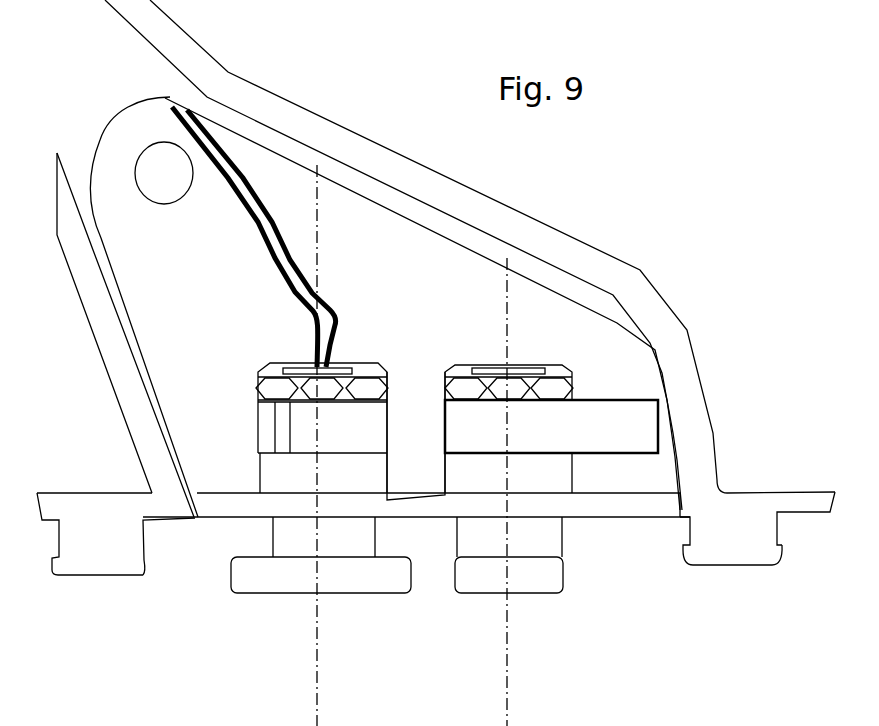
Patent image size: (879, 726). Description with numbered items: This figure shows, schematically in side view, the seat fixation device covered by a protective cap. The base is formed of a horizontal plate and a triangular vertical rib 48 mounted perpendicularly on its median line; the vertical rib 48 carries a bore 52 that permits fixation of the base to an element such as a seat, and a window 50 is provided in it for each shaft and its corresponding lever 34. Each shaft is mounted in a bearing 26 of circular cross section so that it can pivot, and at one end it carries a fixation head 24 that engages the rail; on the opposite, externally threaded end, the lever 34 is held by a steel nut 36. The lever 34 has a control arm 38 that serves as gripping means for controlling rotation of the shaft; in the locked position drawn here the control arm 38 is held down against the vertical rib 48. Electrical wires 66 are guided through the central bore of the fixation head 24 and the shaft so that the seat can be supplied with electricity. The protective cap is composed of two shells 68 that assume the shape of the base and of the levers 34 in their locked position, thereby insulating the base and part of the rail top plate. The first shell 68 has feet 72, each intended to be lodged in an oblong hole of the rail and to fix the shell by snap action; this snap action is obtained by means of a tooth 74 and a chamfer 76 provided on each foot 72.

The fixation head 24 is at (378, 582).
The bearing 26 is at (367, 537).
The lever 34 is at (451, 430).
The nut 36 is at (380, 388).
The control arm 38 is at (280, 422).
The vertical rib 48 is at (124, 120).
The window 50 is at (373, 367).
The bore 52 is at (163, 207).
The electrical wires 66 is at (262, 222).
The shell 68 is at (716, 457).
The foot 72 is at (98, 572).
The tooth 74 is at (145, 560).
The chamfer 76 is at (143, 575).